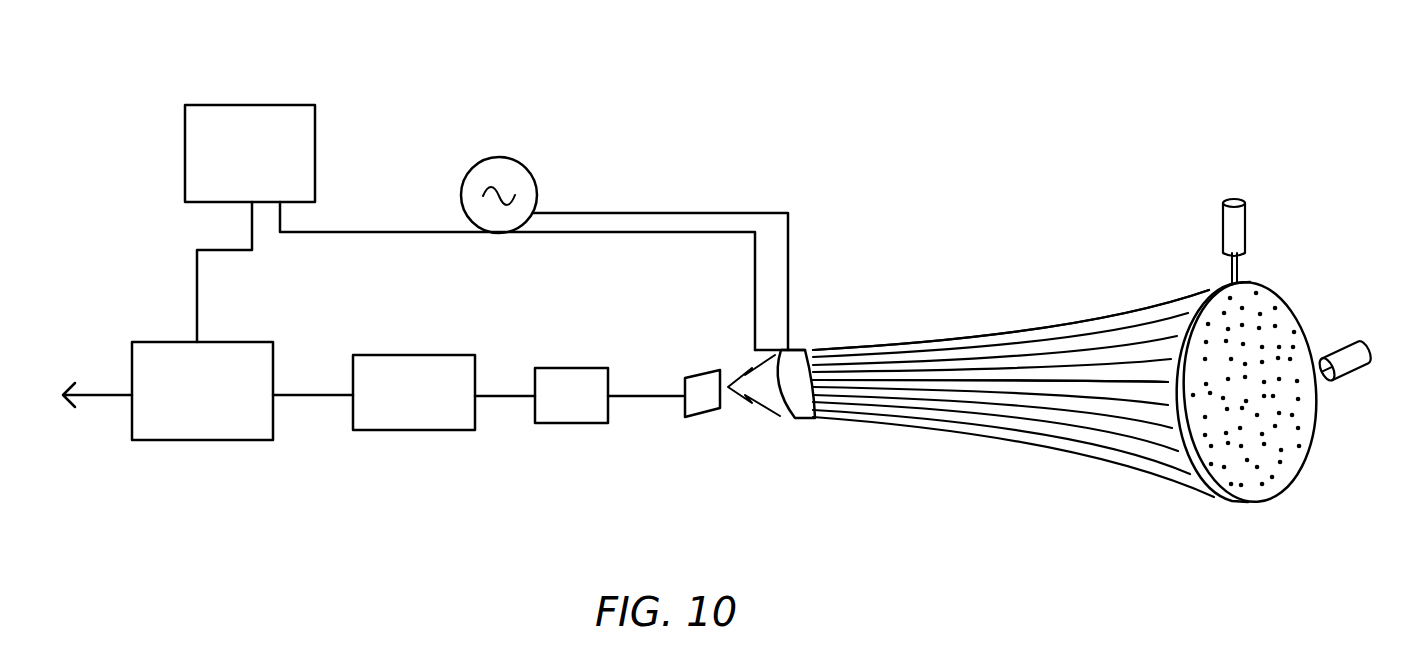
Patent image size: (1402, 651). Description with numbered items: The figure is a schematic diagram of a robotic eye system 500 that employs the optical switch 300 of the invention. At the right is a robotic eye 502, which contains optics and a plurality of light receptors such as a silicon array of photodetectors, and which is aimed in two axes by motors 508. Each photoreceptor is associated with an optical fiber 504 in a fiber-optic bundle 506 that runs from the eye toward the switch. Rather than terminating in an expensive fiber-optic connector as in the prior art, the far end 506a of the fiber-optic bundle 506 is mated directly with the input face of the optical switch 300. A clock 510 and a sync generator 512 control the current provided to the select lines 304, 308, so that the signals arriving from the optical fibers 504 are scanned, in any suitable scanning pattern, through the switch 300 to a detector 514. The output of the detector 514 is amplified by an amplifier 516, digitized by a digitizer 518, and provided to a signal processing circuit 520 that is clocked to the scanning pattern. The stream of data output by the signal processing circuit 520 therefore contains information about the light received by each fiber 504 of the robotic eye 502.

The robotic eye system 500 is at (774, 147).
The clock 510 is at (255, 105).
The sync generator 512 is at (538, 190).
The select line 304 is at (641, 222).
The select line 308 is at (645, 232).
The signal processing circuit 520 is at (145, 342).
The digitizer 518 is at (396, 360).
The amplifier 516 is at (557, 375).
The detector 514 is at (700, 371).
The optical switch 300 is at (808, 420).
The optical fiber 504 is at (1058, 321).
The fiber-optic bundle 506 is at (968, 330).
The far end of the fiber-optic bundle 506a is at (815, 350).
The robotic eye 502 is at (1232, 500).
The motor 508 is at (1236, 232).